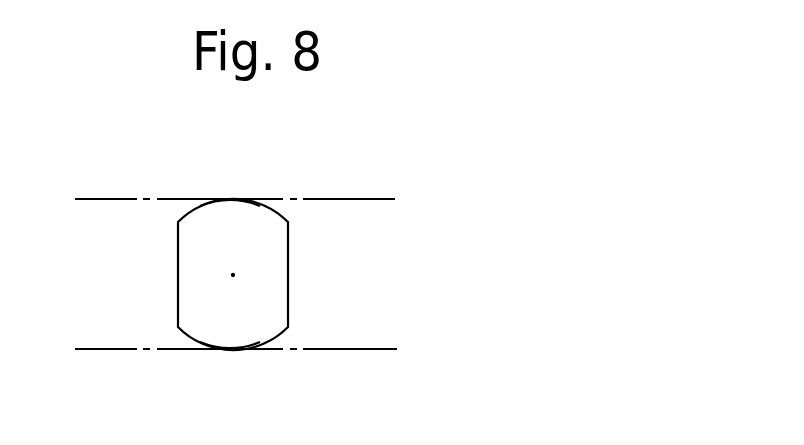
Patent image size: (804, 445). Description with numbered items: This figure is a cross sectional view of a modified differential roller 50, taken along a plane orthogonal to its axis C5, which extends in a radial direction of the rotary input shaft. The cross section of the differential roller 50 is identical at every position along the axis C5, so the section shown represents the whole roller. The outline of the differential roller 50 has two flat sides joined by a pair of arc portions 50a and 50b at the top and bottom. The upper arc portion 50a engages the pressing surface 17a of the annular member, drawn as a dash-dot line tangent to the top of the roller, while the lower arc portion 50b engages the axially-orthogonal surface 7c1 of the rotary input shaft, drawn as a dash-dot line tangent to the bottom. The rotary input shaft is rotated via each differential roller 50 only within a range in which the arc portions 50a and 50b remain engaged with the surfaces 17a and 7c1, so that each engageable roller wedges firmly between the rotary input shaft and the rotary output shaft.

The pressing surface 17a is at (365, 199).
The axially-orthogonal surface 7c1 is at (367, 349).
The differential roller 50 is at (288, 277).
The arc portion 50a is at (230, 199).
The arc portion 50b is at (230, 349).
The axis C5 is at (233, 277).